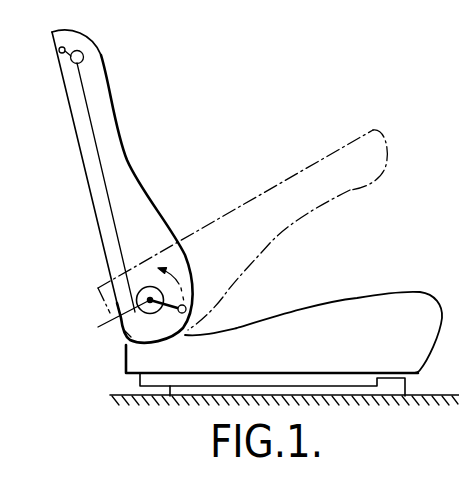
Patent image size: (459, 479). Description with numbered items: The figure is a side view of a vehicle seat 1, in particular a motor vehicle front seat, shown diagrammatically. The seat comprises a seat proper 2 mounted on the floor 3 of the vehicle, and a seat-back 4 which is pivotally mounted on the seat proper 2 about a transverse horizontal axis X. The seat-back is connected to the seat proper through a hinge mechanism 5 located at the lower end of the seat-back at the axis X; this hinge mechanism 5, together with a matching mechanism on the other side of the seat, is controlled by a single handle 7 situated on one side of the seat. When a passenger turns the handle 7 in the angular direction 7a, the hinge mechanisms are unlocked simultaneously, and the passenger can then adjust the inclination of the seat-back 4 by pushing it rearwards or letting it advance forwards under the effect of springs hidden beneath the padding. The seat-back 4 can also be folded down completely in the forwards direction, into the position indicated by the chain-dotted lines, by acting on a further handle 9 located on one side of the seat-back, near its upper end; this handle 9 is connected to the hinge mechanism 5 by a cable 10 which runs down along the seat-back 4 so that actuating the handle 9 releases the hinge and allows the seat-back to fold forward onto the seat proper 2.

The vehicle seat 1 is at (176, 177).
The seat proper 2 is at (377, 308).
The floor 3 is at (132, 397).
The seat-back 4 is at (92, 130).
The first hinge mechanism 5 is at (140, 290).
The handle 7 is at (186, 309).
The angular direction 7a is at (181, 283).
The handle 9 is at (65, 49).
The cable 10 is at (105, 142).
The transverse horizontal axis X is at (119, 321).